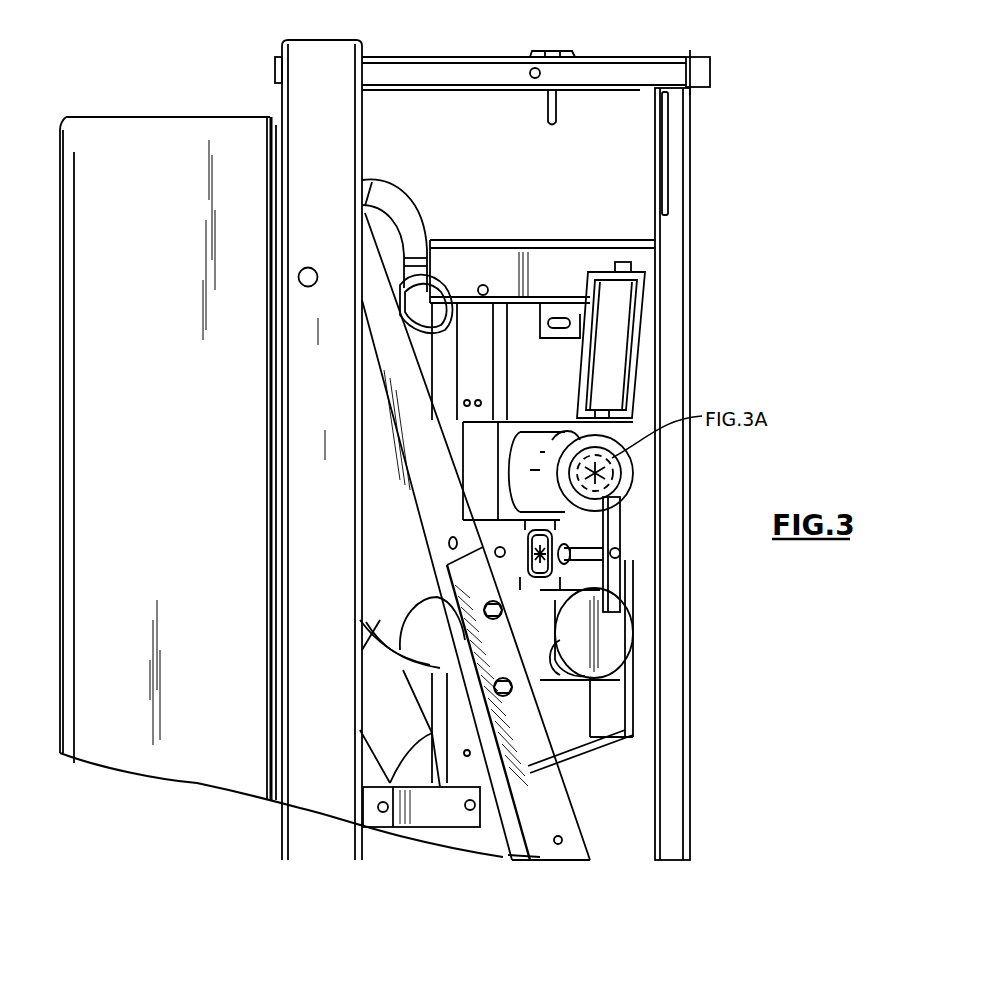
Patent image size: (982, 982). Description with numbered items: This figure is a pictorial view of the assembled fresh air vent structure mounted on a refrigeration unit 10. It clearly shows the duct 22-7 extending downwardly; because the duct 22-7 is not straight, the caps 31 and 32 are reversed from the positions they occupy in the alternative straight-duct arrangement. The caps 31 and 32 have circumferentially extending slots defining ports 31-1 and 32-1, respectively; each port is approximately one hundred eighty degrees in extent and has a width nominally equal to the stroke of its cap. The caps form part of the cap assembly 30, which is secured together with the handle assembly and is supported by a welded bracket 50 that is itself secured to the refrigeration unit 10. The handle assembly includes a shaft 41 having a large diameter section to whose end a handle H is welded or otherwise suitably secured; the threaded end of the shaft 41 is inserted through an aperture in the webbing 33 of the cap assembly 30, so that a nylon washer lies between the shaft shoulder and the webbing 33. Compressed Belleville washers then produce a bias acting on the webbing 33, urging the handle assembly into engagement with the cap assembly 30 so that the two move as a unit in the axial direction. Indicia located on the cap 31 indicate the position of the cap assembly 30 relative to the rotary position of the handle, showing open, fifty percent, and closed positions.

The refrigeration unit 10 is at (720, 63).
The duct 22-7 is at (403, 670).
The cap assembly 30 is at (672, 605).
The cap 31 is at (633, 476).
The port 31-1 is at (557, 440).
The cap 32 is at (628, 640).
The port 32-1 is at (578, 696).
The webbing 33 is at (576, 580).
The shaft 41 is at (610, 563).
The welded bracket 50 is at (610, 735).
The handle H is at (620, 527).